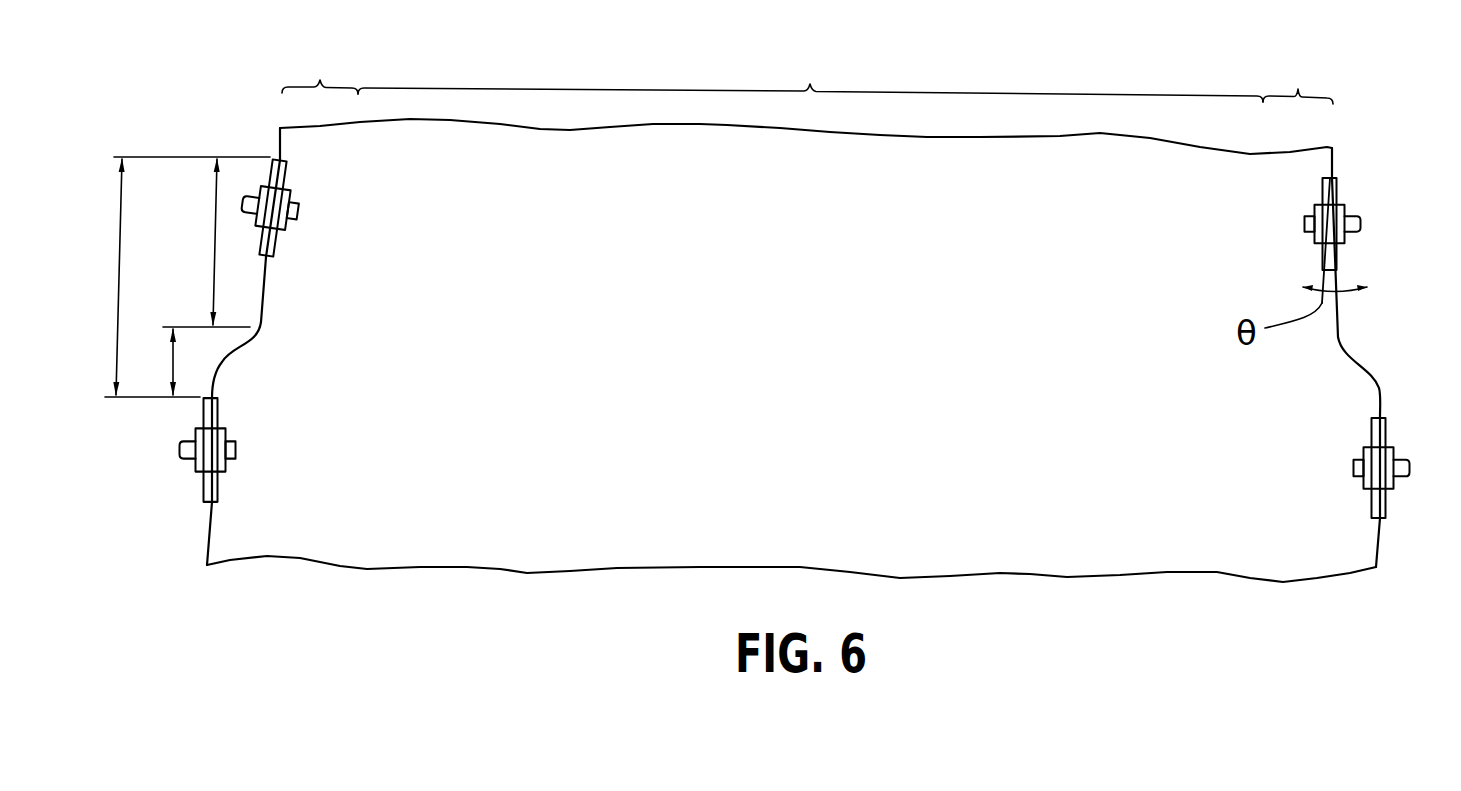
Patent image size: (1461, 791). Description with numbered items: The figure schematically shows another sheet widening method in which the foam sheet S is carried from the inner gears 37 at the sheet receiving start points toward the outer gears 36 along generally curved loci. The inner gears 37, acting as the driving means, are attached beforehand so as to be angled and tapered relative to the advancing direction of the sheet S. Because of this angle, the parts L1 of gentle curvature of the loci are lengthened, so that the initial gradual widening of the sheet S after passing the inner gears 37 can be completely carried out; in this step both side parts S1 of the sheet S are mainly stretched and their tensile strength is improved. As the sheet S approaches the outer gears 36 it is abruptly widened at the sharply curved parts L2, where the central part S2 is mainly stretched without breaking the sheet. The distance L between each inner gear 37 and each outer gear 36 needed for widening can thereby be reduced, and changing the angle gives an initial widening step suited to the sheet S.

The outer gear 36 is at (218, 418).
The inner gear 37 is at (287, 175).
The foam sheet S is at (1308, 330).
The side part of the foam sheet S1 is at (807, 71).
The central part of the foam sheet S2 is at (810, 73).
The distance between inner gear and outer gear L is at (181, 277).
The parts of loose curvature of the loci L1 is at (206, 243).
The parts of sharp curvature of the loci L2 is at (151, 362).